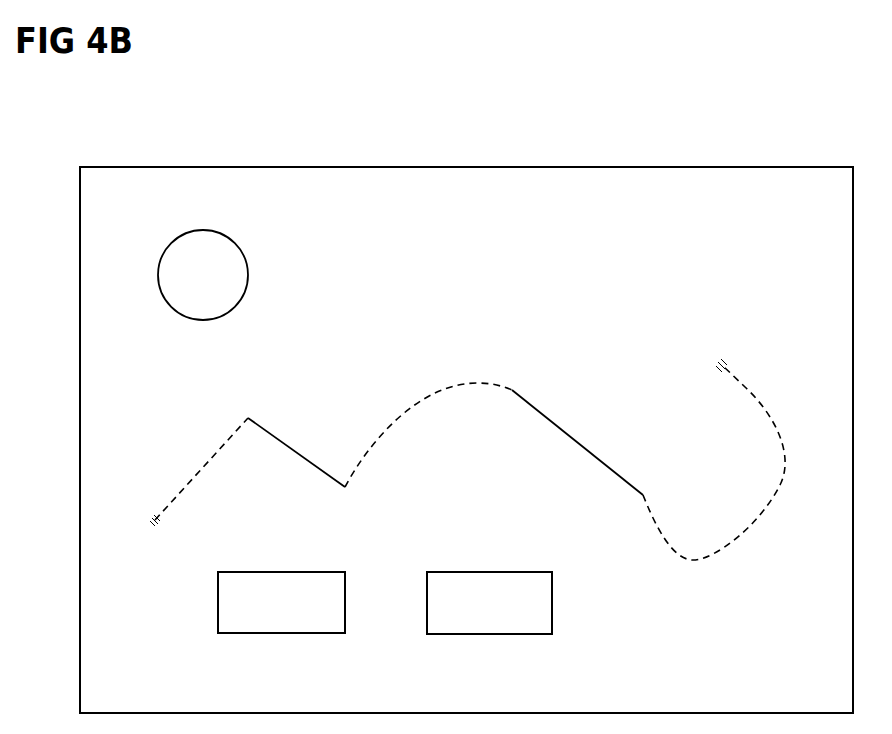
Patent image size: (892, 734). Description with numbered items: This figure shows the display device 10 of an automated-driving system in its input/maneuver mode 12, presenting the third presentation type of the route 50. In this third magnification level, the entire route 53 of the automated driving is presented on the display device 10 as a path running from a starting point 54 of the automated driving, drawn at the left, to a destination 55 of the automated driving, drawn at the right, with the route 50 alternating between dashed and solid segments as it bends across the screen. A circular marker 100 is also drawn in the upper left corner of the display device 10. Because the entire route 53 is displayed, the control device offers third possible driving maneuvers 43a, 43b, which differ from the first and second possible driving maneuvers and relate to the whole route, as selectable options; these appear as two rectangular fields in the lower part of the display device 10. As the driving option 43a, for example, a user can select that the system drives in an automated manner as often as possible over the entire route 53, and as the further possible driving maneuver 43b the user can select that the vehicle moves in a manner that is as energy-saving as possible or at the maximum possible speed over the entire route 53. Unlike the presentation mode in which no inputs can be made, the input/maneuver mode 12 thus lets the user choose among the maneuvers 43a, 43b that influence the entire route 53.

The display device 10 is at (588, 163).
The input/maneuver mode 12 is at (360, 307).
The circular marker / icon 100 is at (203, 275).
The route 50 is at (494, 376).
The entire route 53 is at (475, 342).
The starting point 54 is at (145, 497).
The destination 55 is at (714, 437).
The possible driving maneuver 43a is at (280, 635).
The possible driving maneuver 43b is at (495, 635).